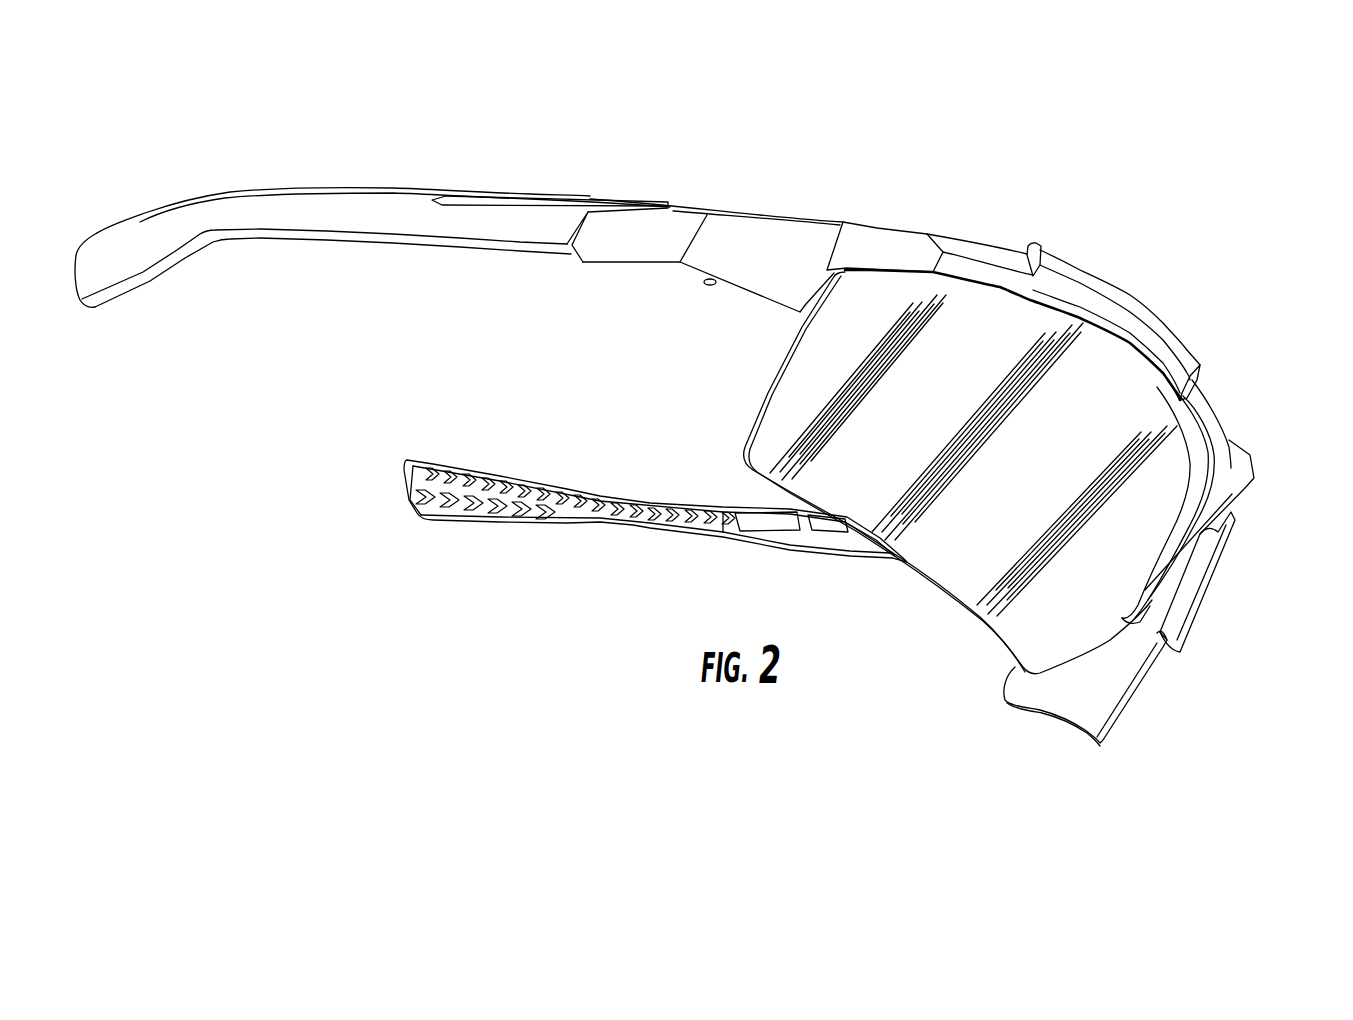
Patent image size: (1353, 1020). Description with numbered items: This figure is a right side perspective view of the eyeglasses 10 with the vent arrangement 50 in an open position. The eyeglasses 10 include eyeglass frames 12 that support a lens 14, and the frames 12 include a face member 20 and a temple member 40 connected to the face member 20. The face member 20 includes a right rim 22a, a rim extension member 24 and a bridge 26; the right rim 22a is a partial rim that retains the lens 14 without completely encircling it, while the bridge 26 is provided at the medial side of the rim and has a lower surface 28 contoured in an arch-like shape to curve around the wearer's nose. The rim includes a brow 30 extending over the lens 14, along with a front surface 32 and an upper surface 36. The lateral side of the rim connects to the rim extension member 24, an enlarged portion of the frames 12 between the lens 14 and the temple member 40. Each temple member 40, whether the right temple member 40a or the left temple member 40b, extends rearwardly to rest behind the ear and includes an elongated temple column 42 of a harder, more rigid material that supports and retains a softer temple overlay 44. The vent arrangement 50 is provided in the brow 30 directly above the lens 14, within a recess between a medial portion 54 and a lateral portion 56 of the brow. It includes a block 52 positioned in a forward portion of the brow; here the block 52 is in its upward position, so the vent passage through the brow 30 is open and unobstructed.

The eyeglasses 10 is at (777, 177).
The eyeglass frames 12 is at (970, 250).
The lens 14 is at (763, 403).
The face member 20 is at (1171, 727).
The right rim 22a is at (940, 250).
The rim extension member 24 is at (833, 232).
The bridge 26 is at (1240, 490).
The lower surface 28 is at (1207, 600).
The brow 30 is at (1203, 380).
The front surface 32 is at (1082, 290).
The upper surface 36 is at (1102, 280).
The temple member 40 is at (448, 432).
The right temple member 40a is at (140, 247).
The left temple member 40b is at (482, 523).
The temple column 42 is at (600, 220).
The temple overlay 44 is at (350, 194).
The vent arrangement 50 is at (1187, 323).
The block 52 is at (1133, 300).
The medial portion 54 is at (1210, 417).
The lateral portion 56 is at (1013, 263).